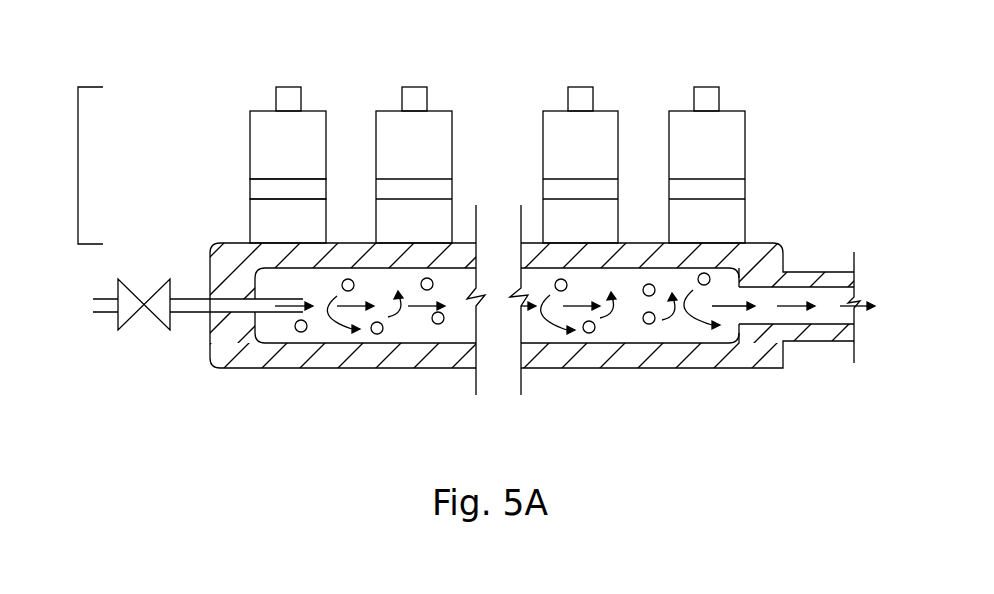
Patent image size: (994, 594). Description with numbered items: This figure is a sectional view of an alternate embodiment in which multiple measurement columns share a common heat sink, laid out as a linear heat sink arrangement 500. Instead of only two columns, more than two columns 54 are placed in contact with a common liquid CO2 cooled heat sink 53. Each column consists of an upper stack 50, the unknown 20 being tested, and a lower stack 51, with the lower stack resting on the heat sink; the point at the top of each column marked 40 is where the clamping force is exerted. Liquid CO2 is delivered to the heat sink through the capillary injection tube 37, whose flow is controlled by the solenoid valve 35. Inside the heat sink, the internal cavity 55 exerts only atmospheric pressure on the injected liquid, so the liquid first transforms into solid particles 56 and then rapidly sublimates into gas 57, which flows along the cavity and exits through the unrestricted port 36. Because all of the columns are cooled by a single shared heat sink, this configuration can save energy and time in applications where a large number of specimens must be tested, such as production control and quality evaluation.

The columns 54 is at (78, 165).
The upper stack 50 is at (268, 150).
The unknown 20 is at (263, 188).
The lower stack 51 is at (263, 228).
The clamping force point 40 is at (283, 93).
The common liquid CO2 cooled heat sink 53 is at (225, 263).
The linear heat sink arrangement 500 is at (775, 358).
The internal cavity 55 is at (332, 322).
The capillary injection tube 37 is at (225, 308).
The solenoid valve 35 is at (158, 323).
The unrestricted port 36 is at (803, 280).
The solid particles 56 is at (377, 334).
The gas 57 is at (674, 286).